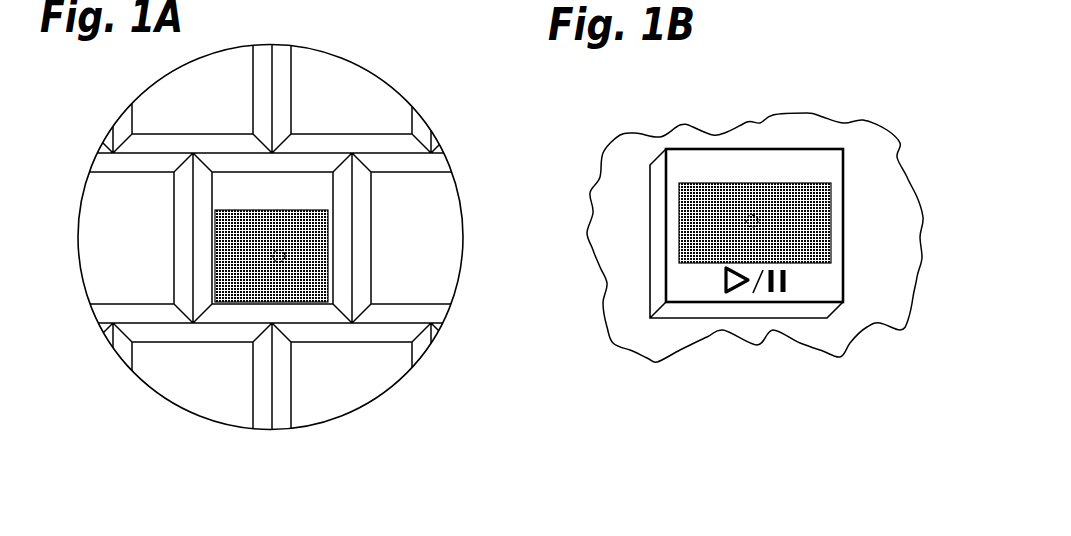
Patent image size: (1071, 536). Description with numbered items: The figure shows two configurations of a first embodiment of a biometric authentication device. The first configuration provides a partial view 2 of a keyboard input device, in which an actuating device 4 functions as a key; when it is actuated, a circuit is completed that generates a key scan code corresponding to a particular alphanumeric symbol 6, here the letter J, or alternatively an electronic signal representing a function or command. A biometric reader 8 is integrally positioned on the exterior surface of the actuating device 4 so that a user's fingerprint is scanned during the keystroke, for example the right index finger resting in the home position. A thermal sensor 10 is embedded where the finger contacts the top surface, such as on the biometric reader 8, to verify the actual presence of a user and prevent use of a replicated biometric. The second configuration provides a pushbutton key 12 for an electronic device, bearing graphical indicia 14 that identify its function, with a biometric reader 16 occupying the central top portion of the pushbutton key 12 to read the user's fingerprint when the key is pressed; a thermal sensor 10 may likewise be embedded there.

In FIG. 1A, the partial view 2 is at (365, 67).
In FIG. 1A, the actuating device 4 is at (272, 182).
In FIG. 1A, the alphanumeric symbol 6 is at (225, 185).
In FIG. 1A, the biometric reader 8 is at (293, 250).
In FIG. 1A, the thermal sensor 10 is at (270, 258).
In FIG. 1B, the thermal sensor 10 is at (755, 223).
In FIG. 1B, the pushbutton key 12 is at (800, 150).
In FIG. 1B, the graphical indicia 14 is at (822, 175).
In FIG. 1B, the biometric reader 16 is at (790, 220).